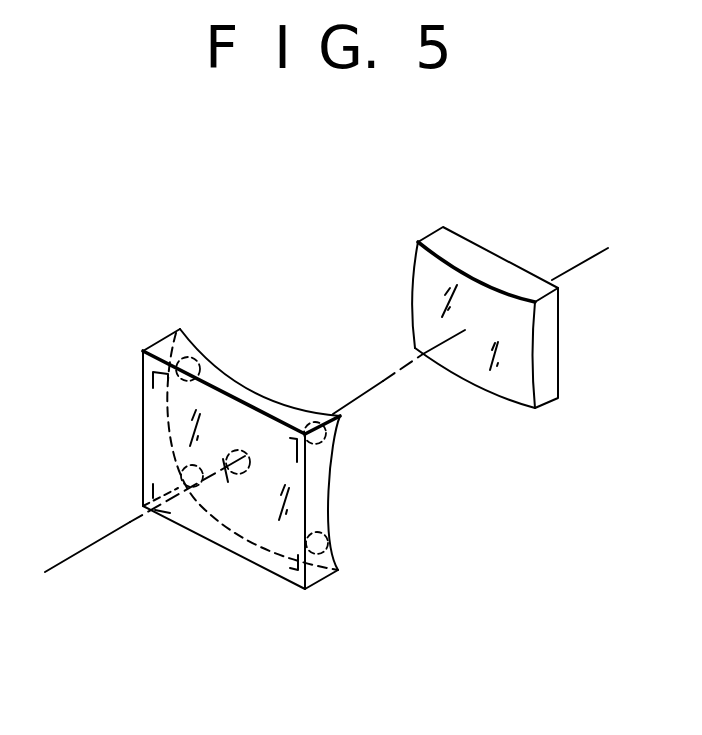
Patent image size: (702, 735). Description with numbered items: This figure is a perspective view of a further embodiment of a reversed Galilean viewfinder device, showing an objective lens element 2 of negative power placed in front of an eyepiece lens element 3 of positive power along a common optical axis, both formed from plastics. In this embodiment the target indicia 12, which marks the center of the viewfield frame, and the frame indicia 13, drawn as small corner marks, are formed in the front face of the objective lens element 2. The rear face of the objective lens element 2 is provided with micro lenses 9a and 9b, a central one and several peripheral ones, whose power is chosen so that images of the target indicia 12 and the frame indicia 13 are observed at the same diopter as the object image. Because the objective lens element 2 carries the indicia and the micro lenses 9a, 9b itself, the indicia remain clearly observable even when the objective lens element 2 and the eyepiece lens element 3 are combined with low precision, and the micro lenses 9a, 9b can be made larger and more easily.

The objective lens element 2 is at (158, 345).
The eyepiece lens element 3 is at (477, 256).
The micro lens 9a is at (247, 451).
The micro lenses 9b is at (195, 357).
The target indicia 12 is at (232, 476).
The frame indicia 13 is at (150, 496).